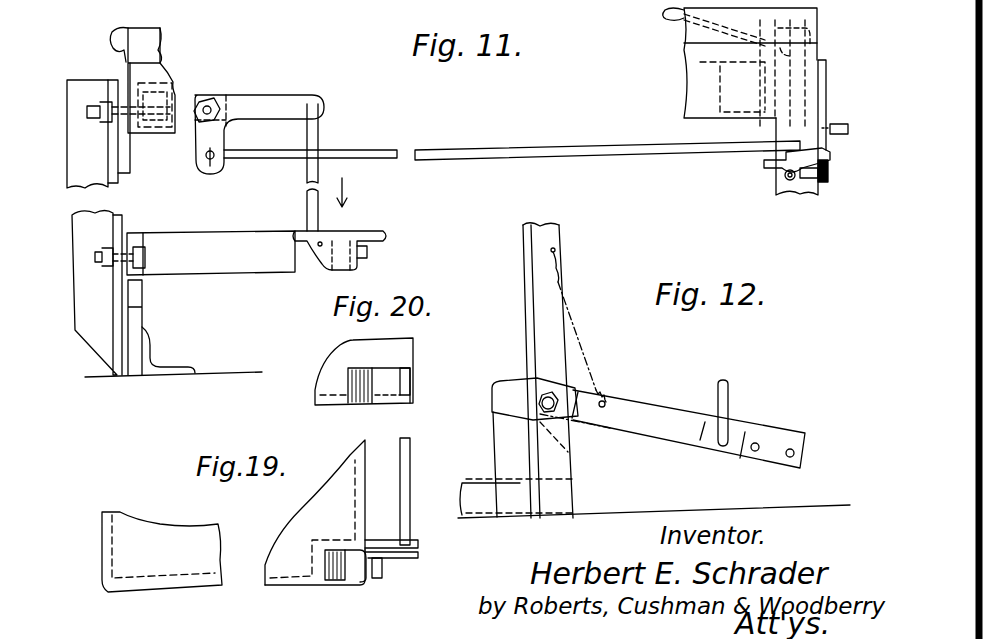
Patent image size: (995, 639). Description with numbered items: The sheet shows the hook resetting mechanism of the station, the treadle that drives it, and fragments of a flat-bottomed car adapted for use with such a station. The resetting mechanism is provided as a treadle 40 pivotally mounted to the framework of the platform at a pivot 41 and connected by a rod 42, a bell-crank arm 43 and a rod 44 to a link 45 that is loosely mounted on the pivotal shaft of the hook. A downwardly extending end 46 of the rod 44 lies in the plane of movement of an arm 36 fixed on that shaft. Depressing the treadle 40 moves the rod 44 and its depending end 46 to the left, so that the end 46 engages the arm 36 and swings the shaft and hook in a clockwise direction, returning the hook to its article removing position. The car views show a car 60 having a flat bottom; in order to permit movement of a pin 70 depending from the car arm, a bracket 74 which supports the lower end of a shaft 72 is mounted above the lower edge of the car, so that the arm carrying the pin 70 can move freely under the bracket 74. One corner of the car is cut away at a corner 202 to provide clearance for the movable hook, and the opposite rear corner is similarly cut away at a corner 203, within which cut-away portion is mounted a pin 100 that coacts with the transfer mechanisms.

In FIG. 11, the arm 36 is at (766, 165).
In FIG. 11, the treadle 40 is at (356, 232).
In FIG. 12, the treadle 40 is at (795, 413).
In FIG. 12, the pivot 41 is at (545, 396).
In FIG. 11, the rod 42 is at (305, 205).
In FIG. 11, the bell-crank arm 43 is at (258, 108).
In FIG. 11, the rod 44 is at (442, 150).
In FIG. 11, the link 45 is at (832, 152).
In FIG. 11, the downwardly extending end 46 is at (802, 180).
In FIG. 20, the car 60 is at (364, 371).
In FIG. 19, the car 60 is at (315, 512).
In FIG. 19, the pin 70 is at (383, 570).
In FIG. 19, the shaft 72 is at (412, 470).
In FIG. 19, the bracket 74 is at (370, 528).
In FIG. 20, the pin 100 is at (412, 384).
In FIG. 19, the cut away corner 202 is at (340, 566).
In FIG. 20, the cut away corner 203 is at (368, 388).